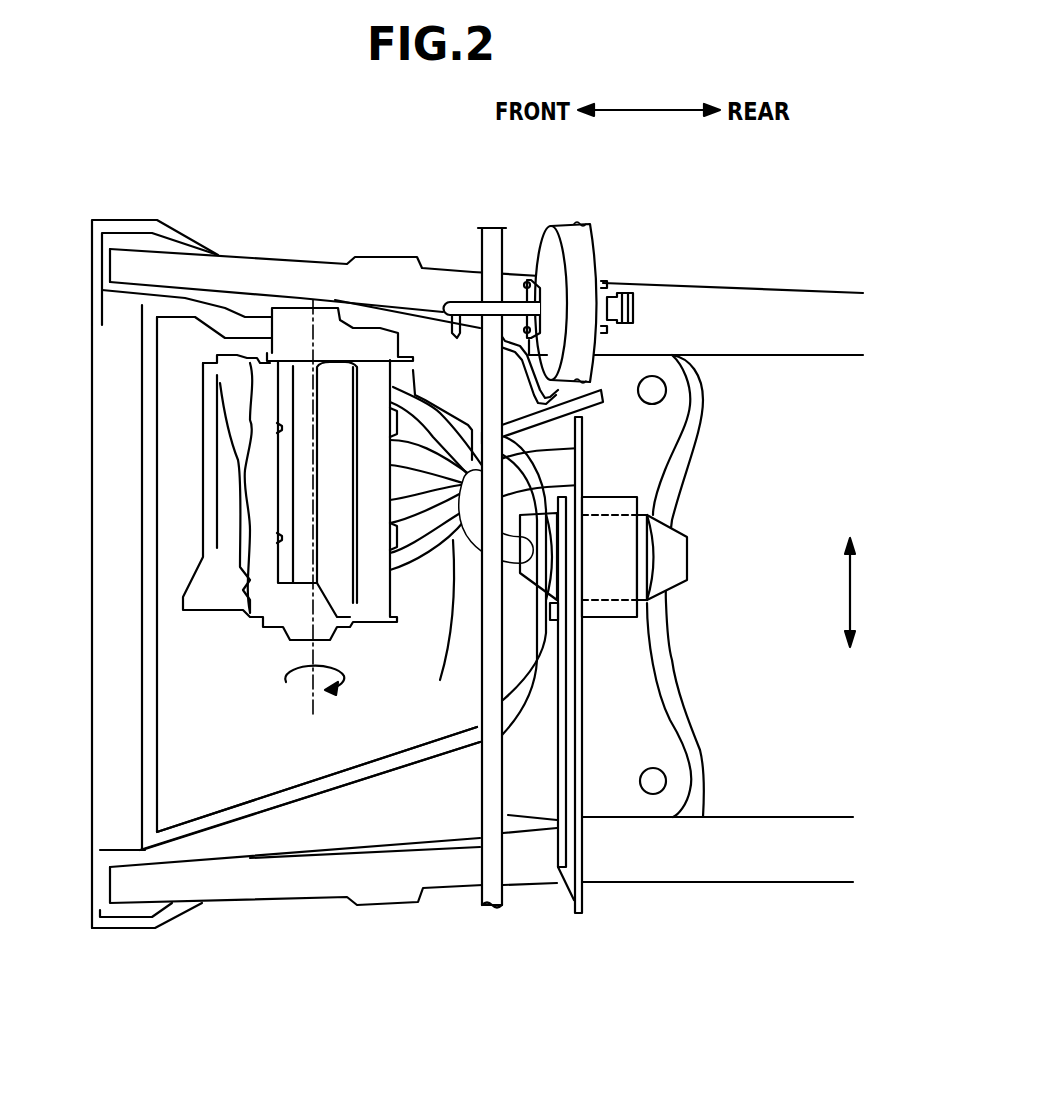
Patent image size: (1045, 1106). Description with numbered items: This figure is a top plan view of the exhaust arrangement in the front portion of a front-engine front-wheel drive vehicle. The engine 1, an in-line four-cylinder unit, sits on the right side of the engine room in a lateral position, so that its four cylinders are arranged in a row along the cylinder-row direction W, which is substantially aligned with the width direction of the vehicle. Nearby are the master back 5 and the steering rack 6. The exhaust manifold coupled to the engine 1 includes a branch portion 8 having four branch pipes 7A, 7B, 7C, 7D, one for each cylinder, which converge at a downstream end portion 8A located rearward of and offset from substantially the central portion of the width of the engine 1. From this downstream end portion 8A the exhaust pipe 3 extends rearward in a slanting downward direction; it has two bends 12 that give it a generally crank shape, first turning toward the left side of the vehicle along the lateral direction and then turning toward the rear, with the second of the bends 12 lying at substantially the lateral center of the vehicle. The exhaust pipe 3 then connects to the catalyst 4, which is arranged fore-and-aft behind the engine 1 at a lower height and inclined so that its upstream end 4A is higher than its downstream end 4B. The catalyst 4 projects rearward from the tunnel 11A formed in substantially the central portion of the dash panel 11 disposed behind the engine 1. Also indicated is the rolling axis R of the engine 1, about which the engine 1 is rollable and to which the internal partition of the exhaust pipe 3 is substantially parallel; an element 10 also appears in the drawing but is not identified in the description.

The engine 1 is at (287, 418).
The exhaust pipe 3 is at (470, 553).
The catalyst 4 is at (645, 545).
The upstream end 4A is at (580, 485).
The downstream end 4B is at (690, 570).
The master back 5 is at (588, 243).
The steering rack 6 is at (493, 862).
The branch pipe 7A is at (418, 575).
The branch pipe 7B is at (400, 513).
The branch pipe 7C is at (400, 456).
The branch pipe 7D is at (412, 398).
The branch portion 8 is at (440, 570).
The downstream end portion 8A is at (580, 448).
The heat insulator 10 is at (508, 560).
The dash panel 11 is at (582, 748).
The tunnel 11A is at (553, 620).
The bend 12 is at (487, 480).
The rolling axis R is at (313, 652).
The cylinder-row direction W is at (846, 612).